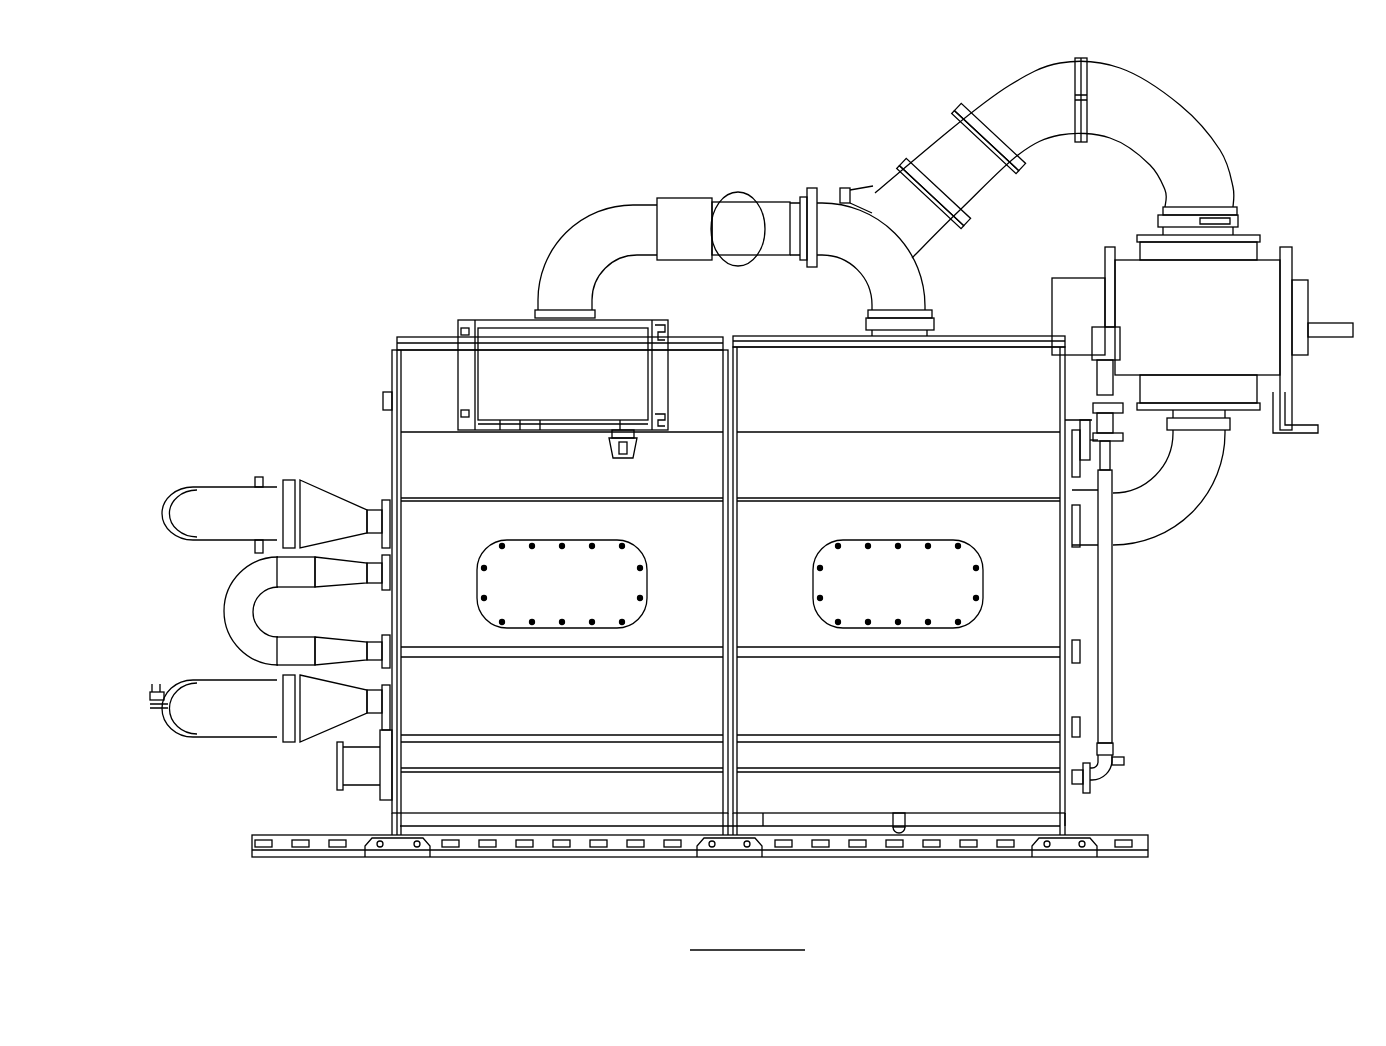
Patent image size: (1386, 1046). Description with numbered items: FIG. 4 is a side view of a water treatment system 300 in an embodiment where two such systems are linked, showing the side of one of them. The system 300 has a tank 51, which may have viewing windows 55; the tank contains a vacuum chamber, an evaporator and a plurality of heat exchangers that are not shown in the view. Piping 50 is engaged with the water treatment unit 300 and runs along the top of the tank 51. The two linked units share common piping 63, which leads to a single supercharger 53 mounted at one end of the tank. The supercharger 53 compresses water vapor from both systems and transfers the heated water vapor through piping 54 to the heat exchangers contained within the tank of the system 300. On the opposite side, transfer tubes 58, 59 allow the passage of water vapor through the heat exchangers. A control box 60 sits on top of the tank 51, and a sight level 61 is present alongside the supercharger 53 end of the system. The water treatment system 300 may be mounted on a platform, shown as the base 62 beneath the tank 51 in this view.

The water treatment system 300 is at (410, 146).
The piping 50 is at (598, 210).
The tank 51 is at (400, 337).
The supercharger 53 is at (1290, 245).
The piping 54 is at (1213, 485).
The viewing windows 55 is at (547, 628).
The transfer tube 58 is at (172, 492).
The transfer tube 59 is at (180, 740).
The control box 60 is at (468, 320).
The sight level 61 is at (1113, 573).
The base 62 is at (1148, 857).
The common piping 63 is at (1148, 72).